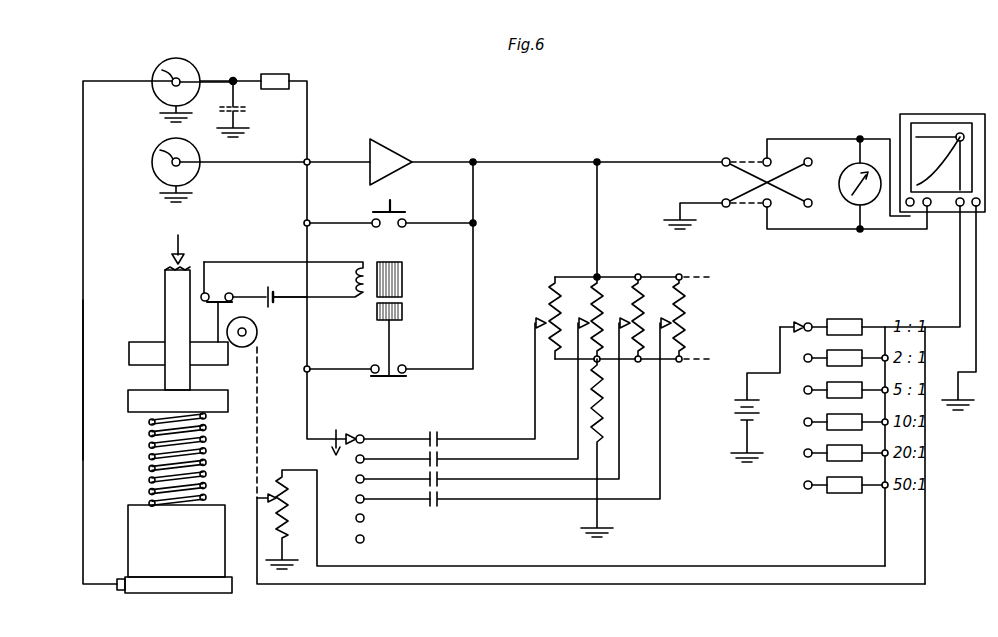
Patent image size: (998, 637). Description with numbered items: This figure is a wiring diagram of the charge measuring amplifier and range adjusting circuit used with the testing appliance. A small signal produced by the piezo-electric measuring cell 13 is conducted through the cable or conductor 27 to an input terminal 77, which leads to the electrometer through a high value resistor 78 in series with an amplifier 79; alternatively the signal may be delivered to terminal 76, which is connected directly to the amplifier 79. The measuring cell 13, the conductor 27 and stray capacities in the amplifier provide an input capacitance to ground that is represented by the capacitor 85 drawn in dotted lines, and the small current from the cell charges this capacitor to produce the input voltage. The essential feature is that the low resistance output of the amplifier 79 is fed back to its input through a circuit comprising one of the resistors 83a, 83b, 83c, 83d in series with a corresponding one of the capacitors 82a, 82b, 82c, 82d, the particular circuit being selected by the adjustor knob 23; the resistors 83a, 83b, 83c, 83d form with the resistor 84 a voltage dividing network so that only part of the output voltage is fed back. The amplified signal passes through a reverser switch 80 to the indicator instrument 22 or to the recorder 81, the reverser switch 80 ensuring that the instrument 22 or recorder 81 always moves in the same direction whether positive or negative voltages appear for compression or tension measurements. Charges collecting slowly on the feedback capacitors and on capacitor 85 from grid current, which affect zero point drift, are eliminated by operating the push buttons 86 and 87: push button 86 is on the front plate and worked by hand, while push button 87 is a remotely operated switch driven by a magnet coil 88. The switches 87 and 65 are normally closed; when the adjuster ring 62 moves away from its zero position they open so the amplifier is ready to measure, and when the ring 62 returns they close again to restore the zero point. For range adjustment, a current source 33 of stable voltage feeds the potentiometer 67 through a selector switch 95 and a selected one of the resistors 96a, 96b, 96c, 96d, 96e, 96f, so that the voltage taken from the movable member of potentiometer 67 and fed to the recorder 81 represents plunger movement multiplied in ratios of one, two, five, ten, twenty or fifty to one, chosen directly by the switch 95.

The measuring cell 13 is at (138, 538).
The indicator instrument 22 is at (850, 174).
The adjustor knob 23 is at (354, 455).
The conductor 27 is at (83, 386).
The current source 33 is at (736, 410).
The adjuster ring 62 is at (146, 352).
The switch 65 is at (228, 290).
The potentiometer 67 is at (288, 527).
The terminal 76 is at (162, 153).
The input terminal 77 is at (171, 72).
The high value resistor 78 is at (276, 76).
The amplifier 79 is at (394, 146).
The reverser switch 80 is at (755, 185).
The recorder 81 is at (928, 140).
The capacitor 82a is at (435, 430).
The capacitor 82b is at (440, 456).
The capacitor 82c is at (432, 488).
The capacitor 82d is at (440, 504).
The resistor 83a is at (557, 275).
The resistor 83b is at (599, 290).
The resistor 83c is at (640, 290).
The resistor 83d is at (681, 290).
The resistor 84 is at (603, 400).
The capacitor 85 is at (228, 101).
The push button 86 is at (400, 208).
The push button 87 is at (382, 378).
The magnet coil 88 is at (357, 292).
The selector switch 95 is at (800, 318).
The resistor 96a is at (834, 326).
The resistor 96b is at (834, 358).
The resistor 96c is at (834, 390).
The resistor 96d is at (834, 422).
The resistor 96e is at (834, 453).
The resistor 96f is at (834, 485).